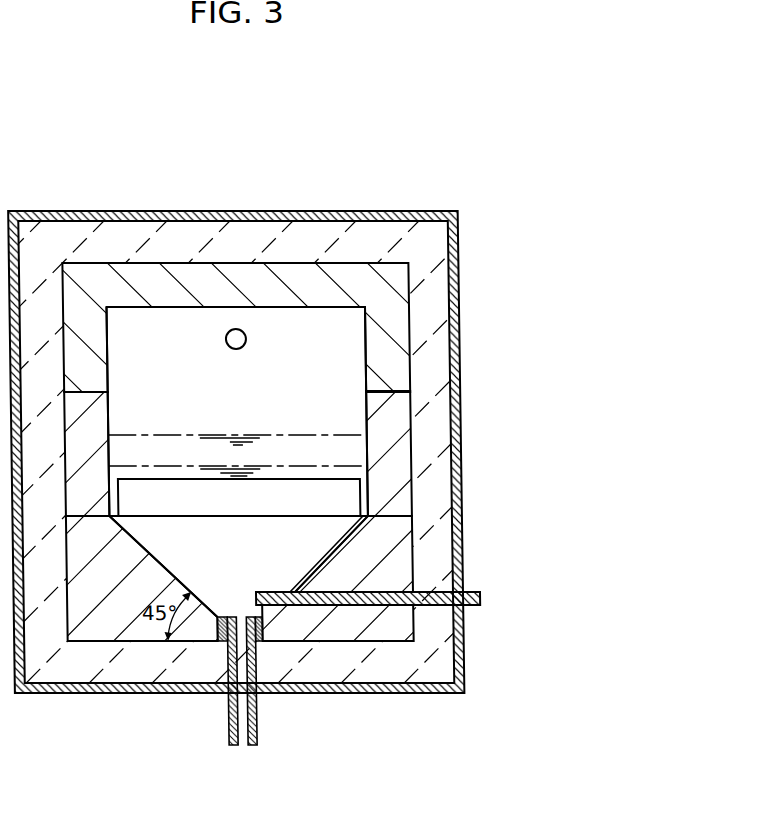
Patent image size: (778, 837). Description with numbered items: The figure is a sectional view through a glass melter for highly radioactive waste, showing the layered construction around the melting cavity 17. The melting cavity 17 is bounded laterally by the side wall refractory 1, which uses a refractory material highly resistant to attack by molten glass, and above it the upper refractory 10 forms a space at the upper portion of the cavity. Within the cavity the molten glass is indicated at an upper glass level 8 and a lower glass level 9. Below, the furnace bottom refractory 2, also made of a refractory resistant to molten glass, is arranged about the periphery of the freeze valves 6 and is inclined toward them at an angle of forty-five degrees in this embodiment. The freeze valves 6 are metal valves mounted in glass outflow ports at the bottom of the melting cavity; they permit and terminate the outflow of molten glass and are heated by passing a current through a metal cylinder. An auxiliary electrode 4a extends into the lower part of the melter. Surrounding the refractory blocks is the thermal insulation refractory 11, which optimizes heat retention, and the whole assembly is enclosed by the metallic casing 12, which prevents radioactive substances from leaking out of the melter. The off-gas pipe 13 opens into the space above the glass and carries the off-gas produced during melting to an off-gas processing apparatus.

The side wall refractory 1 is at (403, 468).
The furnace bottom refractory 2 is at (382, 545).
The auxiliary electrode 4a is at (478, 593).
The freeze valves 6 is at (254, 722).
The upper glass level 8 is at (313, 435).
The lower glass level 9 is at (323, 466).
The upper refractory 10 is at (400, 307).
The thermal insulation refractory 11 is at (436, 253).
The casing 12 is at (401, 211).
The off-gas pipe 13 is at (238, 329).
The melting cavity 17 is at (170, 550).